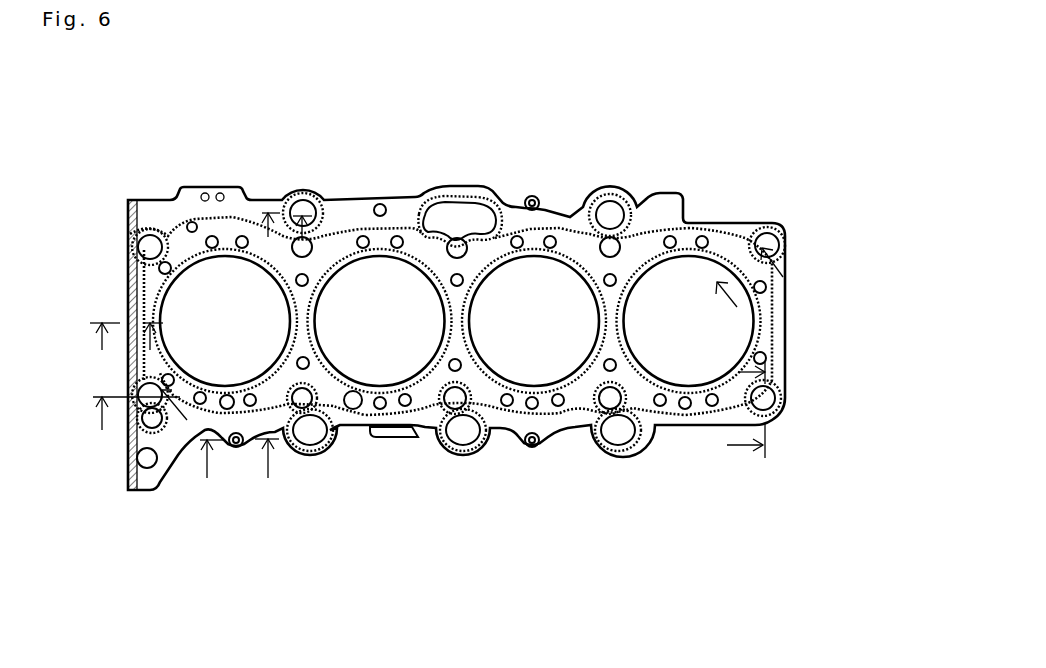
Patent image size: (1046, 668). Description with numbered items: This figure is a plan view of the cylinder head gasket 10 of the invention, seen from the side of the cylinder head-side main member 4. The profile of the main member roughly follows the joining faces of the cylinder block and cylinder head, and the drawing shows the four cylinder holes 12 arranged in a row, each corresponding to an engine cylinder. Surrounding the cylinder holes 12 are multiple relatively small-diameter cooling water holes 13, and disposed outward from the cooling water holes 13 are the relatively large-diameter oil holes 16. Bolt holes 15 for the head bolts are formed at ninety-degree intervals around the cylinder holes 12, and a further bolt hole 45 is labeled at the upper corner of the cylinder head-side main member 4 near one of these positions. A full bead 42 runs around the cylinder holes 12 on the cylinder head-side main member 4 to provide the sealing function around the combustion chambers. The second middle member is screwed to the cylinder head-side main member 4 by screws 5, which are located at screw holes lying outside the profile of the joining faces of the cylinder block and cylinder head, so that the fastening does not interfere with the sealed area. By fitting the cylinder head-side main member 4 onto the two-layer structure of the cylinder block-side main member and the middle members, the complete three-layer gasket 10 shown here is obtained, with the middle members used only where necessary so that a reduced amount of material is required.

The gasket 10 is at (798, 87).
The cylinder head-side main member 4 is at (662, 206).
The screw 5 is at (533, 196).
The cylinder hole 12 is at (695, 367).
The cooling water hole 13 is at (402, 407).
The bolt hole 15 is at (776, 398).
The oil hole 16 is at (311, 191).
The full bead around cylinder holes 42 is at (758, 340).
The bolt hole 45 is at (783, 233).